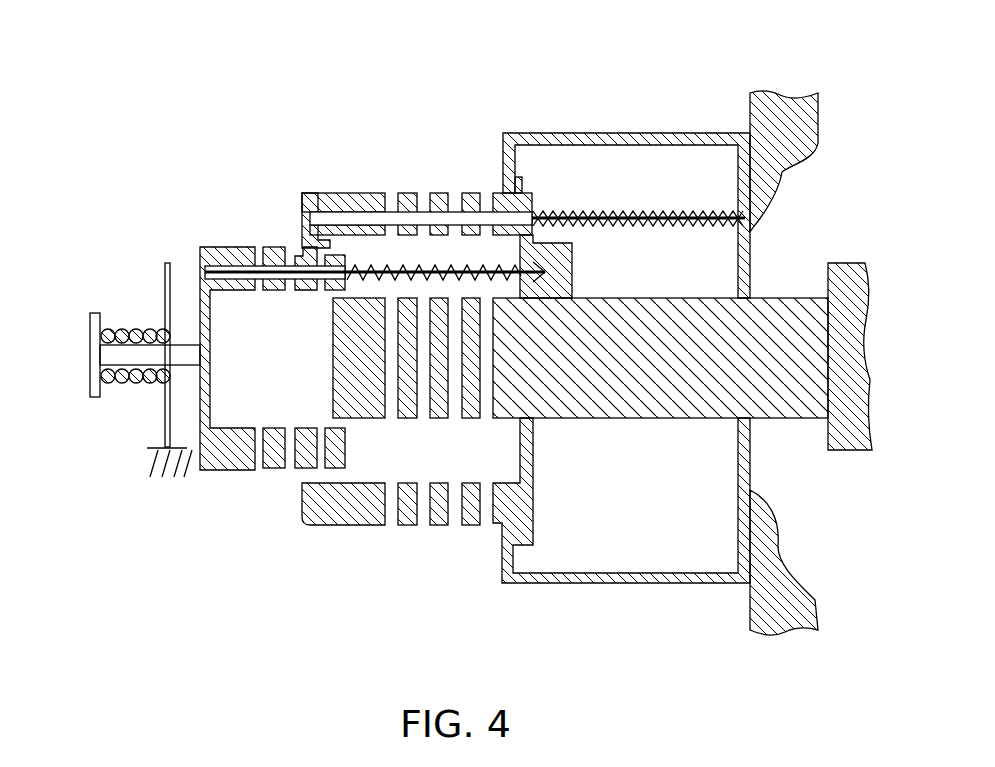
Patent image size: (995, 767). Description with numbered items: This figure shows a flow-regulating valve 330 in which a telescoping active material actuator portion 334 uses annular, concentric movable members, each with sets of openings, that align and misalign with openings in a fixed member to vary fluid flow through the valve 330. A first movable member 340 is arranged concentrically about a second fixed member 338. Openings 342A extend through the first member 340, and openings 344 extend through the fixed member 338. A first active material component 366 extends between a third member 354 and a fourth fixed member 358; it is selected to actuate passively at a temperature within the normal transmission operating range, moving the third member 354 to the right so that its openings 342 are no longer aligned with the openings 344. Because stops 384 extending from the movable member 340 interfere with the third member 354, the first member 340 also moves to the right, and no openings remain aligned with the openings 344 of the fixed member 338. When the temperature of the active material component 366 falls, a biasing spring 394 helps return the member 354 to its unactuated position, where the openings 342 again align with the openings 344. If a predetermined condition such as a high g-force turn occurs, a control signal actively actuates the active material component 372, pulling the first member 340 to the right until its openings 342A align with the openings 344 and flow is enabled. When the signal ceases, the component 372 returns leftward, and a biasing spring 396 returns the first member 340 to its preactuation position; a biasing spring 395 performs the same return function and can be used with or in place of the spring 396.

The flow-regulating valve 330 is at (512, 80).
The telescoping active material actuator portion 334 is at (238, 120).
The second fixed member 338 is at (787, 298).
The first movable member 340 is at (237, 266).
The openings 342 is at (487, 196).
The openings 342A is at (322, 455).
The openings 344 is at (487, 402).
The third member 354 is at (347, 192).
The fourth fixed member 358 is at (623, 133).
The first active material component 366 is at (583, 212).
The active material component 372 is at (230, 262).
The stops 384 is at (300, 195).
The biasing spring 394 is at (657, 212).
The biasing spring 395 is at (120, 393).
The biasing spring 396 is at (487, 262).